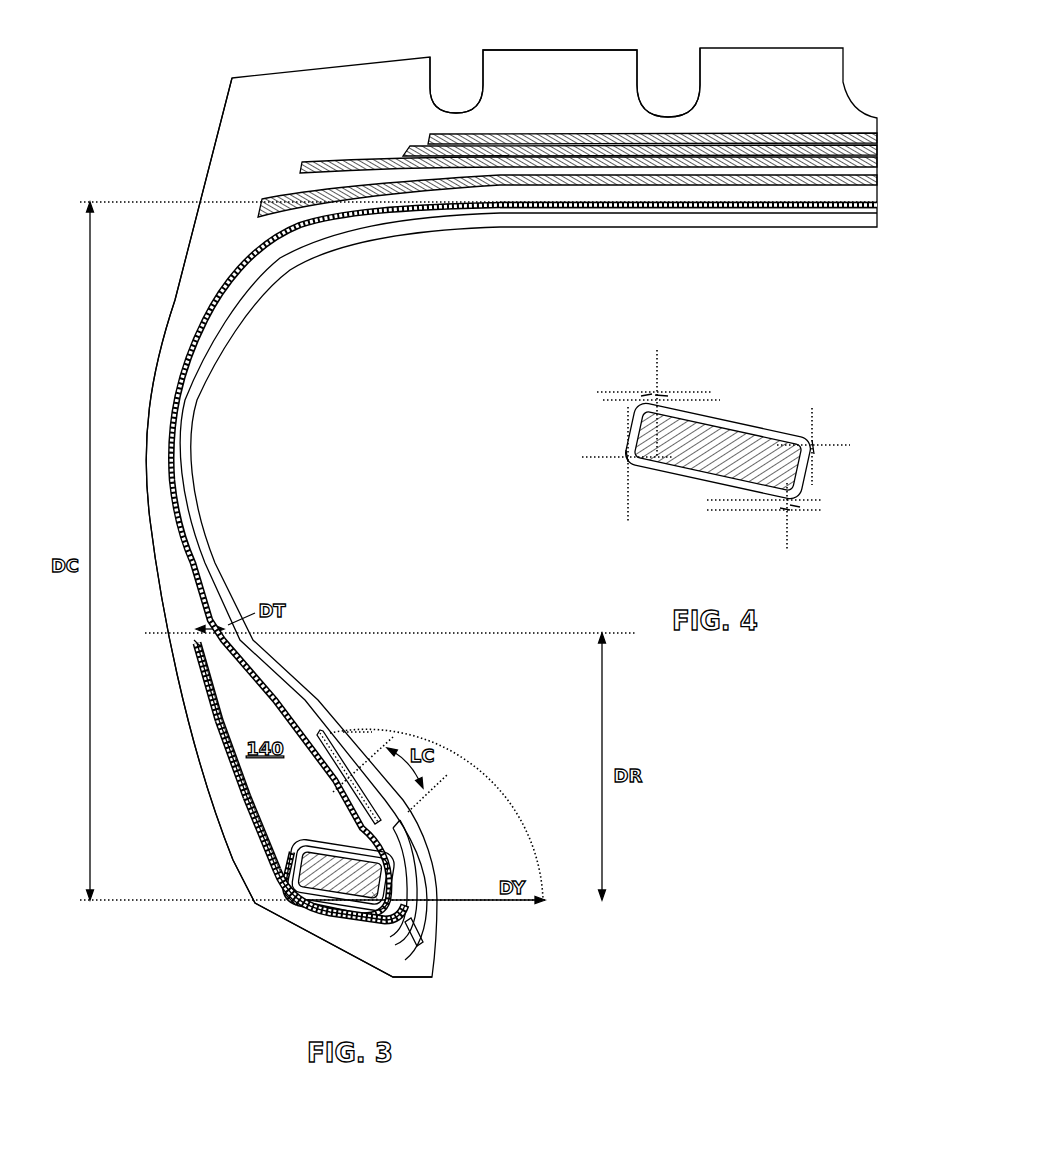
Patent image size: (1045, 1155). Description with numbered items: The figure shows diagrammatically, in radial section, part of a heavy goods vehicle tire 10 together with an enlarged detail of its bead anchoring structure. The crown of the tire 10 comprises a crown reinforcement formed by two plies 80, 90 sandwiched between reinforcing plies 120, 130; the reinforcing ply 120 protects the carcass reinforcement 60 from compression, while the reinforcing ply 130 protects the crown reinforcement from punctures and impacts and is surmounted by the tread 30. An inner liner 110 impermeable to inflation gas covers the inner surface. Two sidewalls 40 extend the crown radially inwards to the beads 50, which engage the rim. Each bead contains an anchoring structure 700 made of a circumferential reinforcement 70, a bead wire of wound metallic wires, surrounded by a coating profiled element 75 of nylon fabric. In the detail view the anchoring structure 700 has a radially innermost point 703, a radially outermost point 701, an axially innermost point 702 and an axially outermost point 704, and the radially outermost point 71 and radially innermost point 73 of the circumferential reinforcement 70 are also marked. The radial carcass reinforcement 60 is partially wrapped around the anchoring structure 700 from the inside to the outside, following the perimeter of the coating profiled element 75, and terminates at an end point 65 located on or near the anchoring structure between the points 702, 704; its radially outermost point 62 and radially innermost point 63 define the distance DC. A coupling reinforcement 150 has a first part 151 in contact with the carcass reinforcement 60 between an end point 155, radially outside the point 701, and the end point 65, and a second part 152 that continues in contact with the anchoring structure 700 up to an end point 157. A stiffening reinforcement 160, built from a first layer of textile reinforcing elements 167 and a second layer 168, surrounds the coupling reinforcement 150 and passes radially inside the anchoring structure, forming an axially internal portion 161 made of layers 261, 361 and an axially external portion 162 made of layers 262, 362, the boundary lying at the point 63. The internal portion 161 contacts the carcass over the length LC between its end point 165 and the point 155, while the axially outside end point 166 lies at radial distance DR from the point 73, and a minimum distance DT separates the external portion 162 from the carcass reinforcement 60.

In FIG. 3, the tire 10 is at (179, 62).
In FIG. 3, the tread 30 is at (560, 85).
In FIG. 3, the sidewall 40 is at (155, 438).
In FIG. 3, the bead 50 is at (479, 712).
In FIG. 3, the carcass reinforcement 60 is at (172, 405).
In FIG. 3, the radially outermost point of the carcass reinforcement 62 is at (864, 192).
In FIG. 3, the radially innermost point of the carcass reinforcement 63 is at (381, 940).
In FIG. 3, the end point of the carcass reinforcement 65 is at (282, 900).
In FIG. 3, the circumferential reinforcement 70 is at (398, 925).
In FIG. 4, the circumferential reinforcement 70 is at (713, 440).
In FIG. 4, the radially outermost point of the circumferential reinforcement 71 is at (664, 384).
In FIG. 3, the radially innermost point of the circumferential reinforcement 73 is at (389, 920).
In FIG. 4, the radially innermost point of the circumferential reinforcement 73 is at (800, 517).
In FIG. 3, the coating profiled element 75 is at (404, 918).
In FIG. 4, the coating profiled element 75 is at (763, 423).
In FIG. 3, the crown reinforcement ply 80 is at (497, 160).
In FIG. 3, the crown reinforcement ply 90 is at (600, 147).
In FIG. 3, the inner liner 110 is at (227, 600).
In FIG. 3, the reinforcing ply 120 is at (430, 181).
In FIG. 3, the reinforcing ply 130 is at (683, 138).
In FIG. 3, the coupling reinforcement 150 is at (484, 830).
In FIG. 3, the first part of the coupling reinforcement 151 is at (407, 898).
In FIG. 3, the second part of the coupling reinforcement 152 is at (412, 852).
In FIG. 3, the end point of the coupling reinforcement 155 is at (409, 814).
In FIG. 3, the end point of the coupling reinforcement 157 is at (346, 849).
In FIG. 3, the stiffening reinforcement 160 is at (112, 800).
In FIG. 3, the axially internal portion 161 is at (163, 793).
In FIG. 3, the axially external portion 162 is at (163, 850).
In FIG. 3, the end point of the axially internal portion 165 is at (322, 722).
In FIG. 3, the axially outside end point of the stiffening reinforcement 166 is at (189, 636).
In FIG. 3, the first layer of textile reinforcing elements 167 is at (218, 722).
In FIG. 3, the second layer of textile reinforcing elements 168 is at (228, 758).
In FIG. 3, the layer of the axially internal portion 261 is at (325, 782).
In FIG. 3, the layer of the axially internal portion 361 is at (292, 816).
In FIG. 3, the layer of the axially external portion 262 is at (273, 868).
In FIG. 3, the layer of the axially external portion 362 is at (270, 884).
In FIG. 3, the anchoring structure 700 is at (517, 990).
In FIG. 4, the radially outermost point of the anchoring structure 701 is at (648, 386).
In FIG. 4, the axially innermost point of the anchoring structure 702 is at (823, 455).
In FIG. 4, the radially innermost point of the anchoring structure 703 is at (781, 515).
In FIG. 4, the axially outermost point of the anchoring structure 704 is at (621, 464).